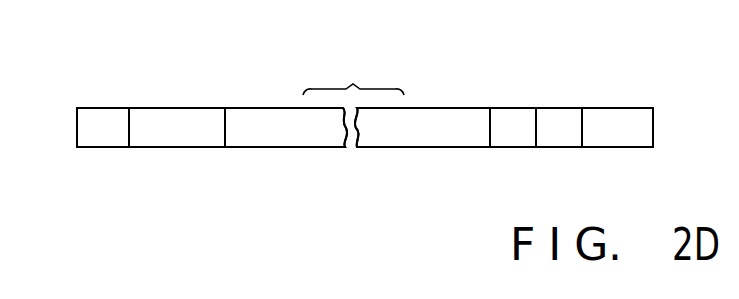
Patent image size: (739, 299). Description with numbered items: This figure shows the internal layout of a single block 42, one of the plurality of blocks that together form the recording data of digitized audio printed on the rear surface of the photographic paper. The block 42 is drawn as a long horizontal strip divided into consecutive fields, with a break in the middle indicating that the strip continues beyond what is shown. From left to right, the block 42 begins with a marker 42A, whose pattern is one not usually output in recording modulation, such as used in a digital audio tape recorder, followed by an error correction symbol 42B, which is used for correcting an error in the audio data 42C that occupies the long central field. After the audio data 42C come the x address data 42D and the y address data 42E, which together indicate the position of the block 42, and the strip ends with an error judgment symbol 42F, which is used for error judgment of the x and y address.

The block 42 is at (341, 207).
The marker 42A is at (103, 135).
The error correction symbol 42B is at (190, 122).
The audio data 42C is at (320, 130).
The x address data 42D is at (507, 120).
The y address data 42E is at (560, 130).
The error judgment symbol 42F is at (620, 115).